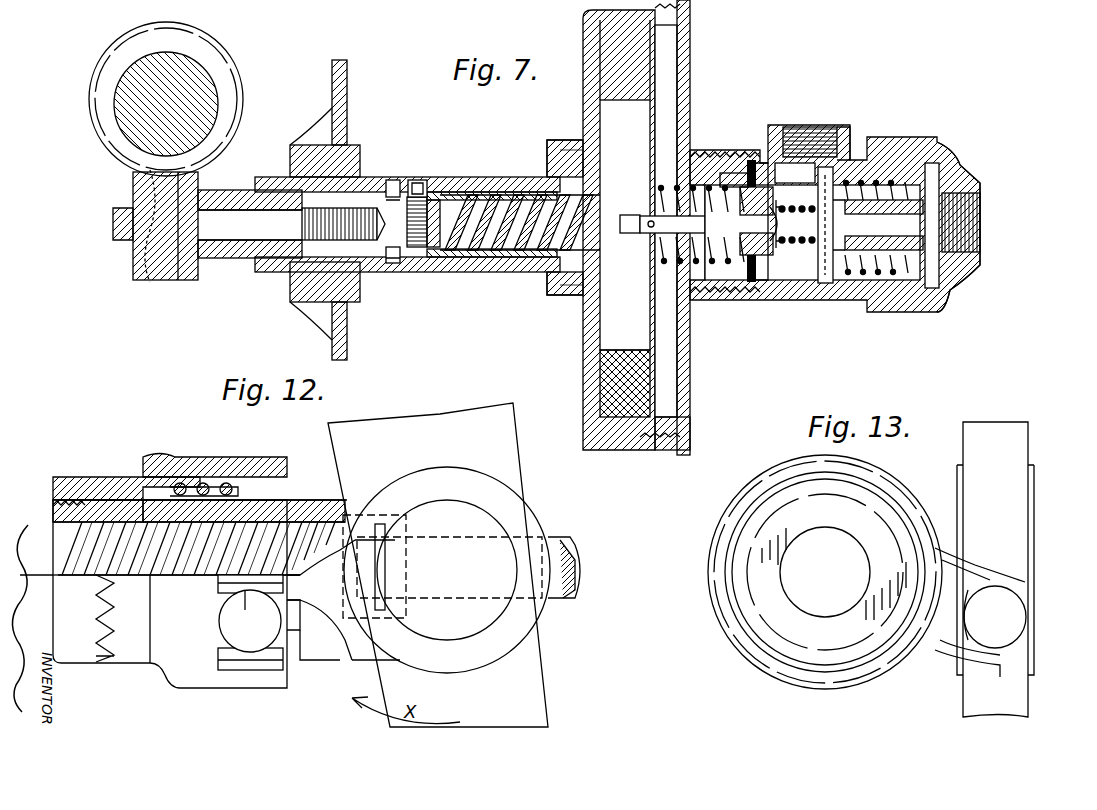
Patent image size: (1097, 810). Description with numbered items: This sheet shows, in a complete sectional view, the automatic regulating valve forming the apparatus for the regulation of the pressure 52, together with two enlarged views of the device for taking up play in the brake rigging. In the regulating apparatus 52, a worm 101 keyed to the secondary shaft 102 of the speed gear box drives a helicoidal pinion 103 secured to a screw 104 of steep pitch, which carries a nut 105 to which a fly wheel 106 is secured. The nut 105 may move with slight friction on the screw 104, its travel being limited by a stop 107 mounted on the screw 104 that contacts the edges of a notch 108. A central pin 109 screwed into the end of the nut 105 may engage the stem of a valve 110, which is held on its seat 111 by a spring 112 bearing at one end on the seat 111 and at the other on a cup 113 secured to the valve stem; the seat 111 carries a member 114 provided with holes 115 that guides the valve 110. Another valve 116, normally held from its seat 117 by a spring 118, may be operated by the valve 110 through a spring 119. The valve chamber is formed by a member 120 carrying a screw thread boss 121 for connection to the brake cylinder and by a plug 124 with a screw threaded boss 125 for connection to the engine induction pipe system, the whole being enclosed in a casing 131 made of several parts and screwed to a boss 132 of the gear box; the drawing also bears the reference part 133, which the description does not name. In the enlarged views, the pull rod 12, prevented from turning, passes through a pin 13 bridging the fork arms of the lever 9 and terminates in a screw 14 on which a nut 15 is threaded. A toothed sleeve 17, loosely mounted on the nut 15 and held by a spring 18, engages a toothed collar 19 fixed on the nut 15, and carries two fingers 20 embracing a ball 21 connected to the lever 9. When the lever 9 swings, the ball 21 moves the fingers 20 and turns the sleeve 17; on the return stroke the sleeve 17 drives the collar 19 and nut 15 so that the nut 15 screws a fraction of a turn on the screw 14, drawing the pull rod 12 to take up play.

In FIG. 7, the worm 101 is at (94, 85).
In FIG. 7, the secondary shaft 102 is at (140, 114).
In FIG. 7, the helicoidal pinion 103 is at (140, 248).
In FIG. 7, the screw 104 is at (457, 240).
In FIG. 7, the nut 105 is at (417, 252).
In FIG. 7, the fly wheel 106 is at (612, 397).
In FIG. 7, the stop 107 is at (418, 184).
In FIG. 7, the notch 108 is at (393, 186).
In FIG. 7, the central pin 109 is at (633, 234).
In FIG. 7, the valve 110 is at (777, 240).
In FIG. 7, the seat 111 is at (740, 277).
In FIG. 7, the spring 112 is at (707, 277).
In FIG. 7, the cup 113 is at (675, 185).
In FIG. 7, the member 114 is at (742, 290).
In FIG. 7, the holes 115 is at (748, 180).
In FIG. 7, the valve 116 is at (820, 197).
In FIG. 7, the seat 117 is at (845, 263).
In FIG. 7, the spring 118 is at (890, 268).
In FIG. 7, the spring 119 is at (790, 260).
In FIG. 7, the member 120 is at (843, 140).
In FIG. 7, the screw thread boss 121 is at (807, 182).
In FIG. 7, the plug 124 is at (933, 295).
In FIG. 7, the screw threaded boss 125 is at (962, 218).
In FIG. 7, the casing 131 is at (583, 330).
In FIG. 7, the boss 132 is at (305, 296).
In FIG. 7, the threads 133 is at (695, 118).
In FIG. 7, the apparatus for the regulation of the pressure 52 is at (700, 80).
In FIG. 12, the lever 9 is at (540, 705).
In FIG. 13, the lever 9 is at (1020, 715).
In FIG. 12, the pull rod 12 is at (560, 552).
In FIG. 12, the pin 13 is at (470, 522).
In FIG. 12, the screw 14 is at (250, 540).
In FIG. 13, the screw 14 is at (812, 588).
In FIG. 12, the nut 15 is at (78, 505).
In FIG. 13, the nut 15 is at (850, 628).
In FIG. 12, the sleeve 17 is at (136, 642).
In FIG. 13, the sleeve 17 is at (728, 588).
In FIG. 12, the spring 18 is at (205, 487).
In FIG. 12, the collar 19 is at (76, 655).
In FIG. 12, the fingers 20 is at (222, 652).
In FIG. 13, the fingers 20 is at (1005, 575).
In FIG. 12, the ball 21 is at (255, 637).
In FIG. 13, the ball 21 is at (1005, 620).